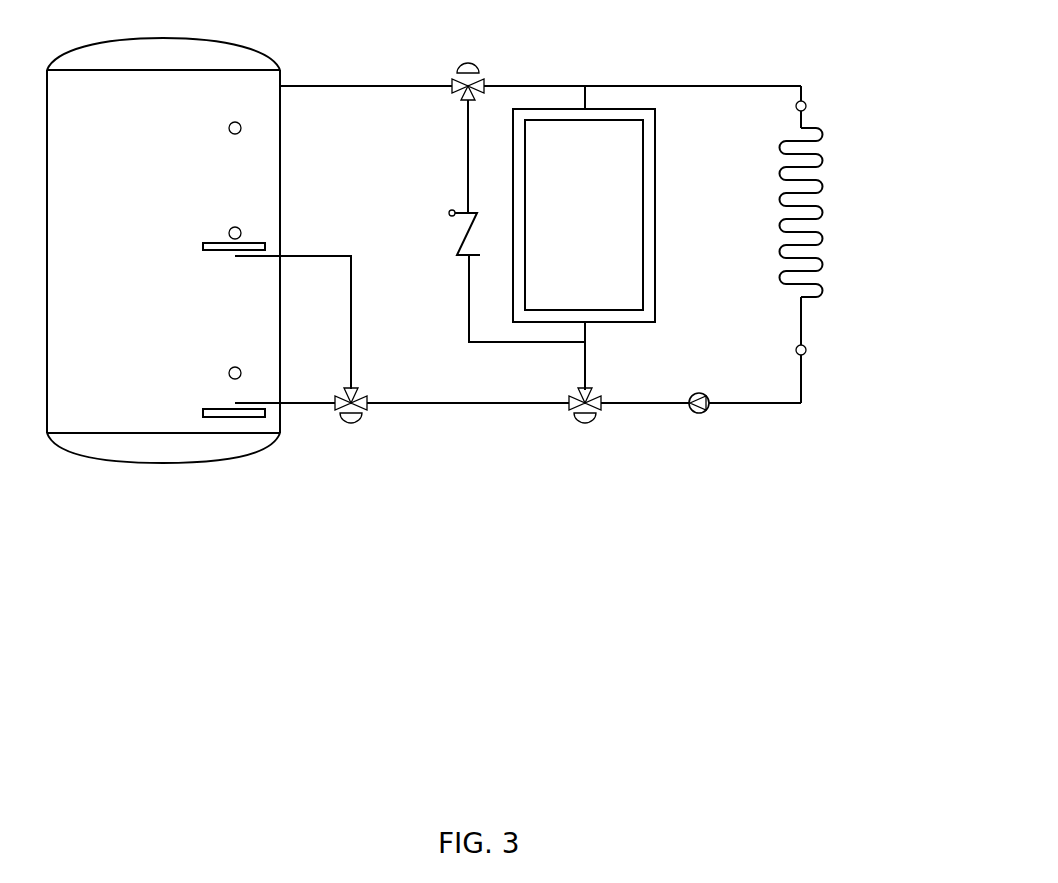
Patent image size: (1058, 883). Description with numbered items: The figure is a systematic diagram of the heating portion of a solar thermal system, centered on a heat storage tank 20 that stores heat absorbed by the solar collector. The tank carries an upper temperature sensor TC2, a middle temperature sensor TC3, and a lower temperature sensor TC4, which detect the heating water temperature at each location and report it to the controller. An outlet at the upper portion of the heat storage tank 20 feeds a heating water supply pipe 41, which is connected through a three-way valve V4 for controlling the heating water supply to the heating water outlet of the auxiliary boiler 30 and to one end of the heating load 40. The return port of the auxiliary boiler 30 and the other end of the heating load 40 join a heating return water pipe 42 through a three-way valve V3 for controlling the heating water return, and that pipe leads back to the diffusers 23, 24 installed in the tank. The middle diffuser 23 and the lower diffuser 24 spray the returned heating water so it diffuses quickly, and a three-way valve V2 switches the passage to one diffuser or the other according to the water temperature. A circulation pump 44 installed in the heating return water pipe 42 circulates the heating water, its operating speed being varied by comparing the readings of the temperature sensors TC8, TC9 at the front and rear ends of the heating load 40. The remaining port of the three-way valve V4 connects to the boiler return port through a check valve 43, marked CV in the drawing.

The heat storage tank 20 is at (129, 452).
The diffuser 23 is at (268, 247).
The diffuser 24 is at (247, 418).
The auxiliary boiler 30 is at (655, 259).
The heating load 40 is at (825, 237).
The heating water supply pipe 41 is at (367, 84).
The heating return water pipe 42 is at (583, 365).
The check valve 43 is at (465, 212).
The circulation pump 44 is at (697, 413).
The 3-way valve V2 is at (345, 428).
The 3-way valve V3 is at (585, 429).
The three-way valve V4 is at (467, 64).
The check valve CV is at (444, 236).
The upper temperature sensor TC2 is at (234, 352).
The middle temperature sensor TC3 is at (234, 214).
The lower temperature sensor TC4 is at (234, 110).
The temperature sensor TC8 is at (831, 106).
The temperature sensor TC9 is at (831, 351).